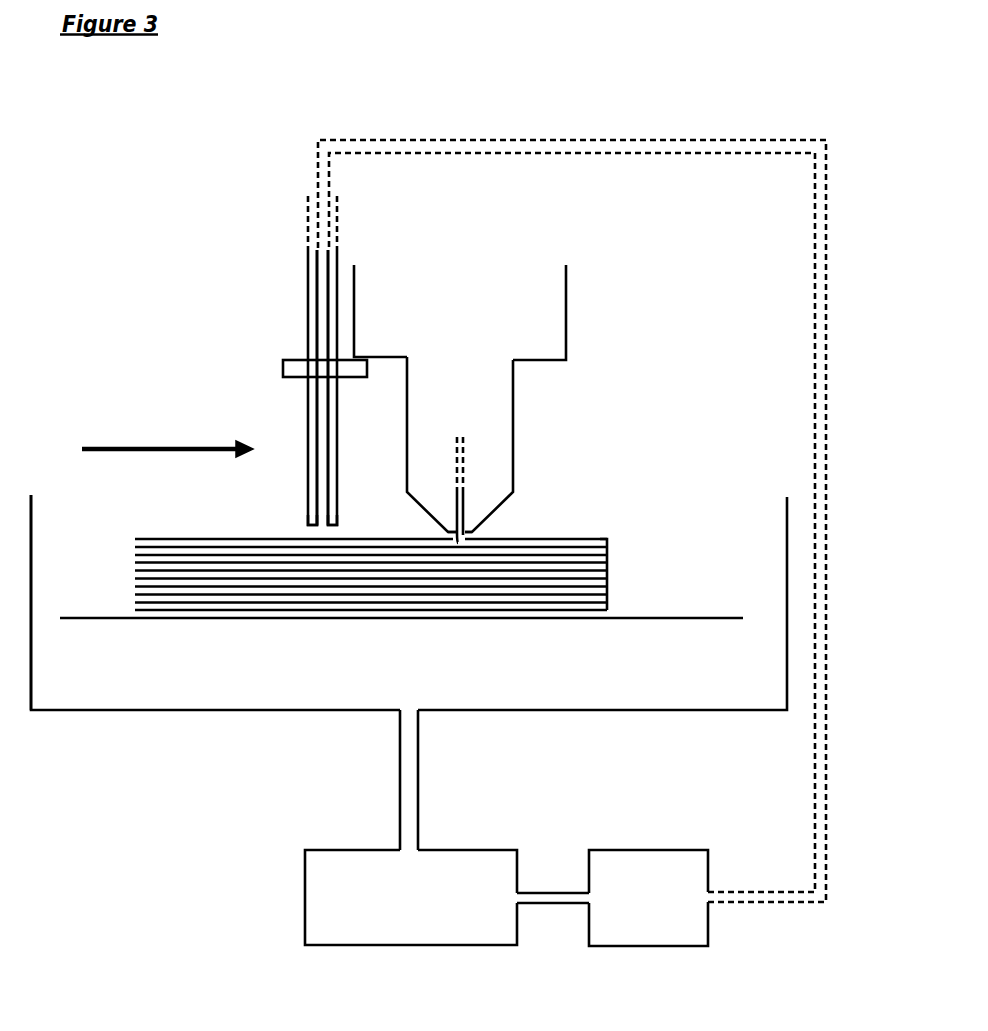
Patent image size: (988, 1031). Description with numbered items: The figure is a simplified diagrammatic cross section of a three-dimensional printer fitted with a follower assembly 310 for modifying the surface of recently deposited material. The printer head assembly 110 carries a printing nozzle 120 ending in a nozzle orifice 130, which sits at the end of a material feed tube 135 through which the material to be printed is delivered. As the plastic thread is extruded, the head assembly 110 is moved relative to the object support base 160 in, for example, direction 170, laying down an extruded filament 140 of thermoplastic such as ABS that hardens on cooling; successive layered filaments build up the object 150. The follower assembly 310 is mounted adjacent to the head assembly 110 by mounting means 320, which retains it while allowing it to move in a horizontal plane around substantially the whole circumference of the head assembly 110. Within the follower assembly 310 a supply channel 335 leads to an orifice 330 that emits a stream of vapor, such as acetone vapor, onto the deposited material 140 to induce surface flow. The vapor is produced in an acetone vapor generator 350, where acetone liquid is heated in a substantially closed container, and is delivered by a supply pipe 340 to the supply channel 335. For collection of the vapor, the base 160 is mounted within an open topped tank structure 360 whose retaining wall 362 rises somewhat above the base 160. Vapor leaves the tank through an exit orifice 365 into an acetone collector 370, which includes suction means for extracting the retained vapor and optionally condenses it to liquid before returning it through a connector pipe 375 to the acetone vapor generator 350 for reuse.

The printer head assembly 110 is at (566, 327).
The printing nozzle 120 is at (513, 422).
The nozzle orifice 130 is at (470, 532).
The material feed tube 135 is at (457, 437).
The extruded filament 140 is at (230, 539).
The object 150 is at (595, 539).
The object support base 160 is at (648, 618).
The direction 170 is at (165, 449).
The follower assembly 310 is at (308, 283).
The mounting means 320 is at (283, 360).
The orifice 330 is at (313, 525).
The supply channel 335 is at (322, 330).
The supply pipe 340 is at (512, 140).
The acetone vapor generator 350 is at (651, 850).
The tank structure 360 is at (515, 710).
The retaining wall 362 is at (32, 680).
The exit orifice 365 is at (407, 710).
The acetone collector 370 is at (463, 850).
The connector pipe 375 is at (547, 893).